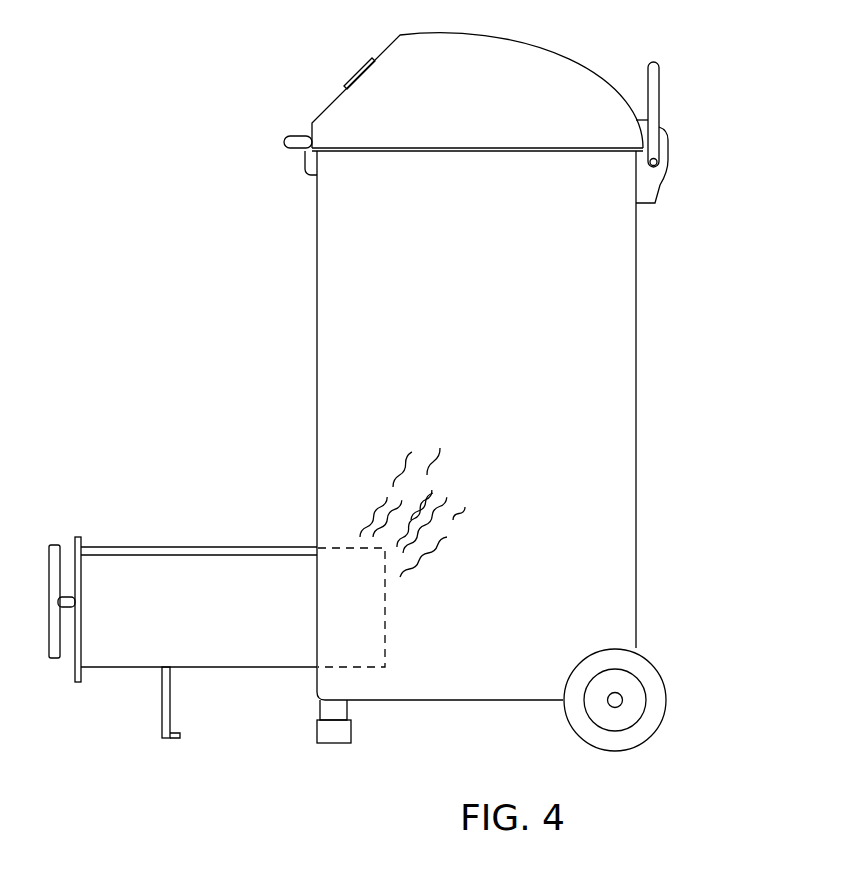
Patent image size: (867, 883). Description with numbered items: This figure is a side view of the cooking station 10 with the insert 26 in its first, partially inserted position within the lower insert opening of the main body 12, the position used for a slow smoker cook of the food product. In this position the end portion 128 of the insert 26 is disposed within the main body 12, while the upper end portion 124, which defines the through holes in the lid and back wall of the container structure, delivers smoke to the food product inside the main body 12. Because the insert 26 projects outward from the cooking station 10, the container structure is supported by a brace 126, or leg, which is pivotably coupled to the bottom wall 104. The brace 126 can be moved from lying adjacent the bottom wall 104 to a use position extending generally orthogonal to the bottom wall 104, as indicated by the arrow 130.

The cooking station 10 is at (399, 413).
The main body 12 is at (655, 268).
The insert 26 is at (183, 636).
The bottom wall 104 is at (248, 668).
The upper end portion 124 is at (364, 508).
The brace 126 is at (170, 703).
The end portion 128 is at (365, 677).
The arrow 130 is at (113, 677).